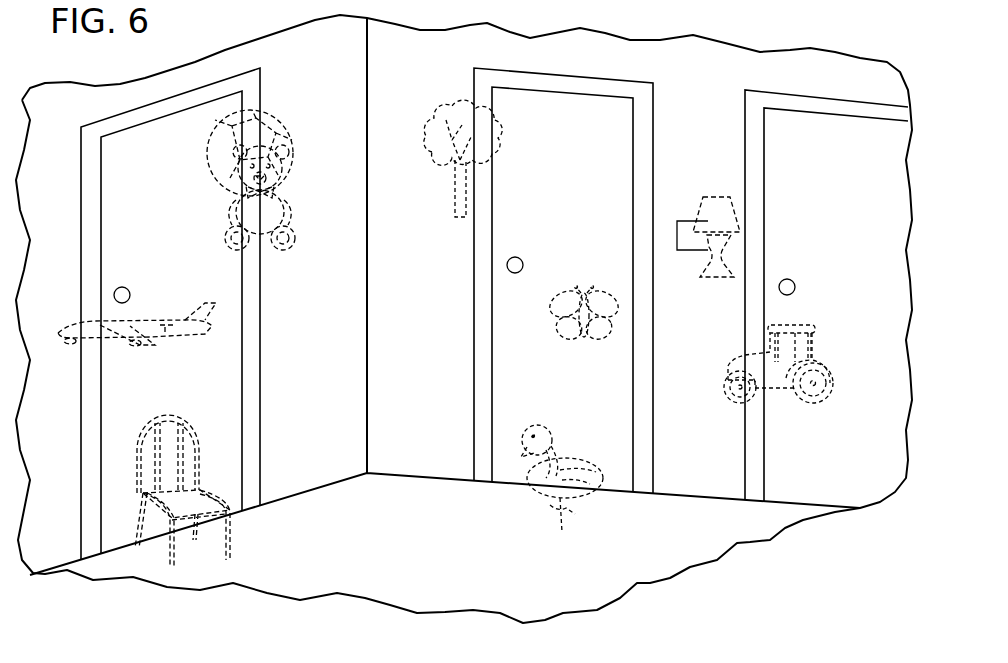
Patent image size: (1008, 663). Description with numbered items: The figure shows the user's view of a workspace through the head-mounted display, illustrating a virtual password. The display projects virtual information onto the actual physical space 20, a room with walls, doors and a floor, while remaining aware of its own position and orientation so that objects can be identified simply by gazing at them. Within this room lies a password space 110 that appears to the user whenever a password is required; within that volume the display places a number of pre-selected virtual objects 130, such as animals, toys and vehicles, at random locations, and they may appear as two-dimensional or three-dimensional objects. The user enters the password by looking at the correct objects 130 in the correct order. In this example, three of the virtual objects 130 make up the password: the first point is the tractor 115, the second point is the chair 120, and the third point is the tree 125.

The physical space 20 is at (391, 572).
The password space 110 is at (438, 358).
The tractor 115 is at (805, 330).
The chair 120 is at (168, 415).
The tree 125 is at (436, 165).
The virtual objects 130 is at (274, 137).